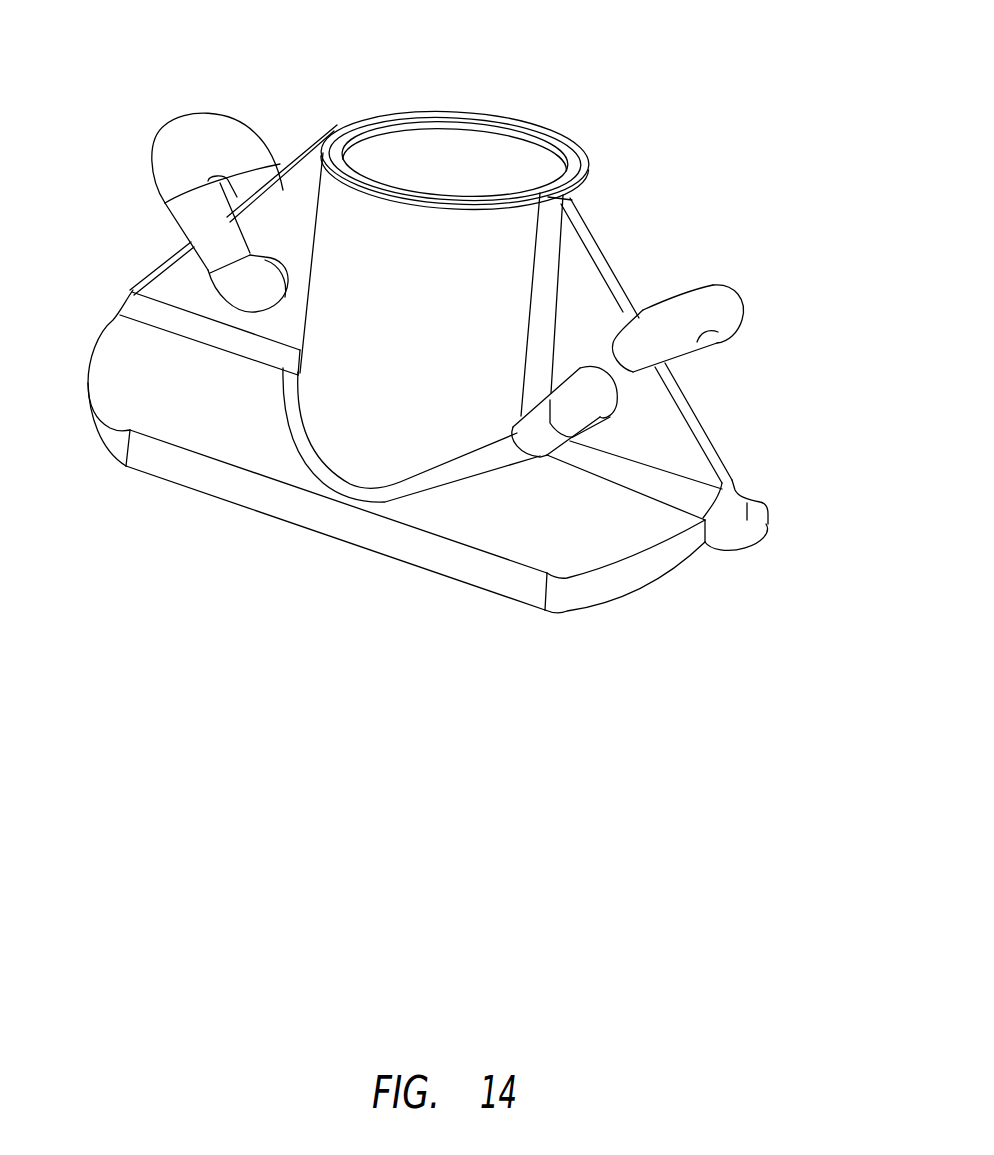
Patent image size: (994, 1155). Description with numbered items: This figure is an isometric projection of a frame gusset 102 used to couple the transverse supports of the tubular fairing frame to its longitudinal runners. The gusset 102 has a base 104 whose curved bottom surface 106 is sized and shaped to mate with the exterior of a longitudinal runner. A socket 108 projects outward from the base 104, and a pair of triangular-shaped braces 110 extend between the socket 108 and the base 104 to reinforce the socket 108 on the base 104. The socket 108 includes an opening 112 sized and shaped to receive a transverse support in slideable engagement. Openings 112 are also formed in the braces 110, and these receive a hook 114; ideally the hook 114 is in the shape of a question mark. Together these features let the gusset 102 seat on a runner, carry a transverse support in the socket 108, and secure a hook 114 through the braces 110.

The frame gusset 102 is at (634, 115).
The base 104 is at (604, 539).
The curved bottom surface 106 is at (493, 604).
The socket 108 is at (523, 112).
The triangular-shaped brace 110 is at (302, 190).
The opening 112 is at (442, 145).
The hook 114 is at (184, 106).